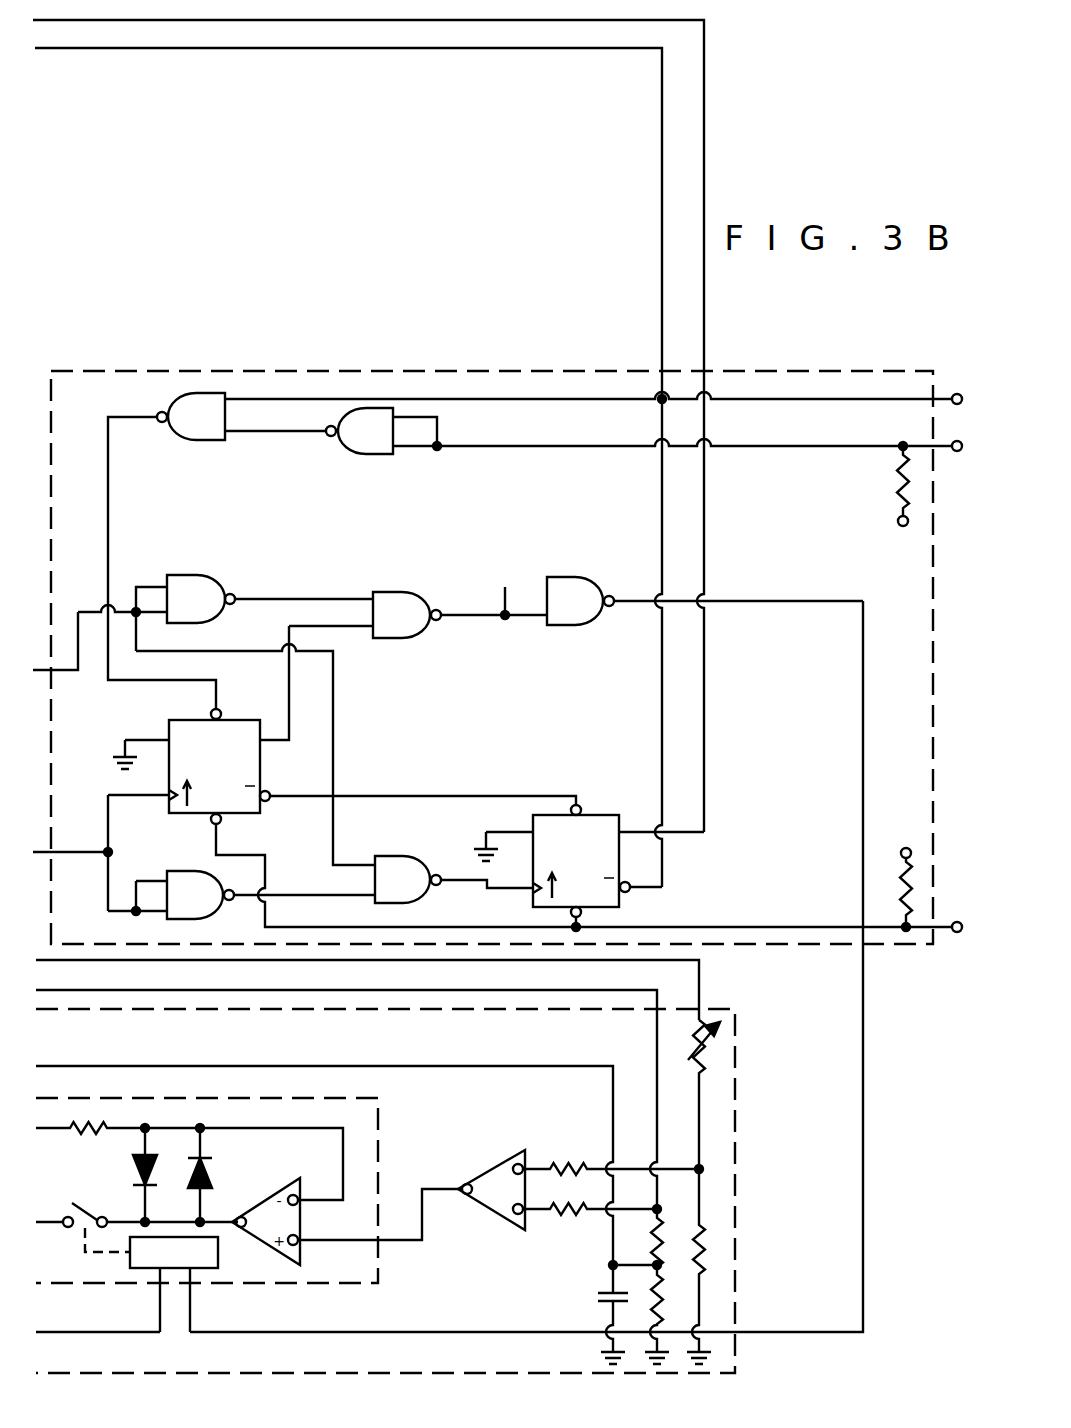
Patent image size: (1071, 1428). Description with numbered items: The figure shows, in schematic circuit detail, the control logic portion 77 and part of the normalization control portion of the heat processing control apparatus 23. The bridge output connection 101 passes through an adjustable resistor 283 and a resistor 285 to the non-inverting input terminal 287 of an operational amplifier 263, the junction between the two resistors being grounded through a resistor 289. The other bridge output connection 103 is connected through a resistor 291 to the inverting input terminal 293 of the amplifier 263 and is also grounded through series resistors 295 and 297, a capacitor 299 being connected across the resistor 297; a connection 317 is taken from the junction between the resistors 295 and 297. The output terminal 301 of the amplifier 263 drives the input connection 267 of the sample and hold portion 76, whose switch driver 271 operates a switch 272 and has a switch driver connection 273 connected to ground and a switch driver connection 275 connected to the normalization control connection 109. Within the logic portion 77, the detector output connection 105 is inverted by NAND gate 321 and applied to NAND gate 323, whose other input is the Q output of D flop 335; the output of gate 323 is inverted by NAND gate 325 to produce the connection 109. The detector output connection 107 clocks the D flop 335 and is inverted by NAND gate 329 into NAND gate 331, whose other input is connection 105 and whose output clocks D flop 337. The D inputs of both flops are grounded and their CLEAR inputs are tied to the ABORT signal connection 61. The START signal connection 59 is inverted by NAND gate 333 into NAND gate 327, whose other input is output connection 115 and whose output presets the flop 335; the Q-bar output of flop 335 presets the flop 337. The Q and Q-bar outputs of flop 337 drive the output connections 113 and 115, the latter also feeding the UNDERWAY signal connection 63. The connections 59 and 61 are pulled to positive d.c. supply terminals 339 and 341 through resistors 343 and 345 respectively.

The heat processing control apparatus 23 is at (770, 154).
The control logic portion 77 is at (480, 371).
The output connection 113 is at (275, 20).
The output connection 115 is at (278, 48).
The UNDERWAY signal connection 63 is at (945, 395).
The START signal connection 59 is at (945, 450).
The ABORT signal connection 61 is at (948, 909).
The resistor 343 is at (896, 492).
The positive d.c. supply terminal 339 is at (896, 524).
The positive d.c. supply terminal 341 is at (912, 851).
The resistor 345 is at (912, 884).
The NAND gate 327 is at (205, 440).
The NAND gate 333 is at (370, 454).
The NAND gate 321 is at (202, 575).
The NAND gate 323 is at (385, 592).
The NAND gate 325 is at (565, 578).
The NAND gate 329 is at (190, 871).
The NAND gate 331 is at (395, 856).
The D flop 335 is at (228, 720).
The D flop 337 is at (590, 815).
The detector output connection 105 is at (63, 672).
The detector output connection 107 is at (62, 852).
The normalization control connection 109 is at (863, 1100).
The bridge output connection 101 is at (699, 962).
The bridge output connection 103 is at (653, 1000).
The connection 317 is at (240, 1066).
The adjustable resistor 283 is at (712, 1050).
The sample and hold portion 76 is at (378, 1132).
The switch 272 is at (84, 1206).
The switch driver 271 is at (218, 1262).
The switch driver connection 273 is at (158, 1318).
The switch driver connection 275 is at (192, 1318).
The input connection 267 is at (402, 1240).
The operational amplifier 263 is at (492, 1160).
The output terminal 301 is at (458, 1180).
The non-inverting input terminal 287 is at (520, 1150).
The inverting input terminal 293 is at (516, 1230).
The resistor 285 is at (566, 1164).
The resistor 291 is at (585, 1212).
The resistor 295 is at (662, 1238).
The resistor 297 is at (678, 1280).
The capacitor 299 is at (598, 1292).
The resistor 289 is at (706, 1248).